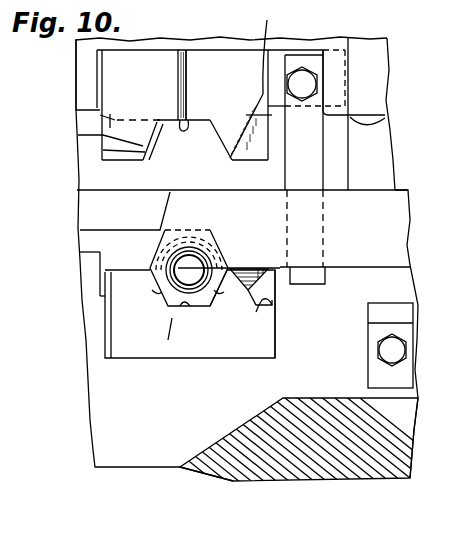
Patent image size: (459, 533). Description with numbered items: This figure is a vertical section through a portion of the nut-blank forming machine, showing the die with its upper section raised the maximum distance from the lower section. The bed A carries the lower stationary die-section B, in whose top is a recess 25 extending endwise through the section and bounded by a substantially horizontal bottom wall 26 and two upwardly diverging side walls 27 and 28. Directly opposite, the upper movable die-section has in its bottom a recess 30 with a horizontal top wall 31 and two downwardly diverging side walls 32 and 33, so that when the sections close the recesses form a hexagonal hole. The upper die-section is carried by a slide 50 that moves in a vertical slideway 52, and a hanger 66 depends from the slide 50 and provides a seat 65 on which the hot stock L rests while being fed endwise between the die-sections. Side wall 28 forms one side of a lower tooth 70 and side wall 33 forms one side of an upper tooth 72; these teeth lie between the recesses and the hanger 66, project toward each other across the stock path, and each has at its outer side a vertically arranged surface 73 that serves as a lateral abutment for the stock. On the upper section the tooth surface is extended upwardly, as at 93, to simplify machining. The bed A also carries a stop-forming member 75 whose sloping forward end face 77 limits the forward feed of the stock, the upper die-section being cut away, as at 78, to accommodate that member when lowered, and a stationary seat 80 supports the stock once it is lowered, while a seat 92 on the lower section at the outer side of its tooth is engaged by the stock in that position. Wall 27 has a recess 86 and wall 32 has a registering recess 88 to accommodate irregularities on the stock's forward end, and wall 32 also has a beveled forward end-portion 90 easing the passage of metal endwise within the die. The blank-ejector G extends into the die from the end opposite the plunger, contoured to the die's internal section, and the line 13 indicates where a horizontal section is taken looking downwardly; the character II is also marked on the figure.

The recess or cut-away of the upper die-section 78 is at (188, 62).
The upwardly extended tooth surface 93 is at (278, 49).
The slide 50 is at (282, 38).
The slideway 52 is at (383, 116).
The beveled forward end-portion 90 is at (78, 133).
The top wall 31 is at (178, 120).
The recess of the upper die-section 30 is at (211, 119).
The side wall 32 is at (150, 140).
The side wall 33 is at (226, 152).
The section line 13— 13 is at (185, 105).
The recess in wall 32 88 is at (102, 147).
The tooth of the upper die-section 72 is at (231, 154).
The vertically arranged surface 73 is at (258, 150).
The hanger 66 is at (307, 175).
The seat 65 is at (307, 266).
The stop-forming member 75 is at (85, 212).
The forward end face of the stop-forming member 77 is at (160, 226).
The tooth of the lower die-section 70 is at (236, 294).
The recess in wall 27 86 is at (146, 271).
The side wall 27 is at (168, 282).
The bottom wall 26 is at (187, 285).
The side wall 28 is at (216, 288).
The seat for the stock 92 is at (281, 306).
The stationary seat 80 is at (370, 306).
The recess of the lower die-section 25 is at (168, 340).
The lower stationary die-section B is at (222, 358).
The section II is at (175, 318).
The bed A is at (125, 452).
The hot bar or stock L is at (405, 185).
The blank-ejector G is at (160, 252).